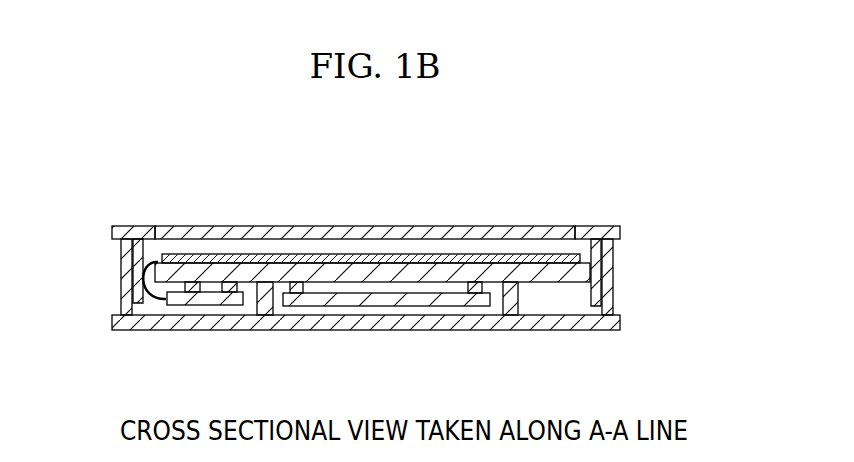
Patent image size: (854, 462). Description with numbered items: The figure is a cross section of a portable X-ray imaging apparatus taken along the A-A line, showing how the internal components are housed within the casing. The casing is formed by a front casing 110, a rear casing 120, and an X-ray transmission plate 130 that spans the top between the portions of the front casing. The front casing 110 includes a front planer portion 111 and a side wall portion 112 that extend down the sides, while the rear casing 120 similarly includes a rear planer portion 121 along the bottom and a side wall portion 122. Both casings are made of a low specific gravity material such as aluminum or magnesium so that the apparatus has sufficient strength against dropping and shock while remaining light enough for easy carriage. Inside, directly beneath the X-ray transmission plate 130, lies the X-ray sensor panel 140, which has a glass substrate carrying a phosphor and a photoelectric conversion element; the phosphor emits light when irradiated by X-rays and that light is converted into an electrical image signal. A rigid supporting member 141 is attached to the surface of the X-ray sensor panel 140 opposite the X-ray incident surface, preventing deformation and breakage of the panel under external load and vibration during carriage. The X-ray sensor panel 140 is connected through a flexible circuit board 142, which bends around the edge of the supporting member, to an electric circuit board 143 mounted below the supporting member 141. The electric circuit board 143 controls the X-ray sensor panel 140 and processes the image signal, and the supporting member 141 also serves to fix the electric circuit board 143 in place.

The front casing 110 is at (620, 226).
The front planer portion 111 is at (580, 227).
The side wall portion 112 is at (601, 256).
The rear casing 120 is at (607, 329).
The rear planer portion 121 is at (540, 322).
The side wall portion 122 is at (603, 291).
The X-ray transmission plate 130 is at (383, 232).
The X-ray sensor panel 140 is at (212, 253).
The rigid supporting member 141 is at (152, 273).
The flexible circuit board 142 is at (156, 294).
The electric circuit board 143 is at (297, 302).